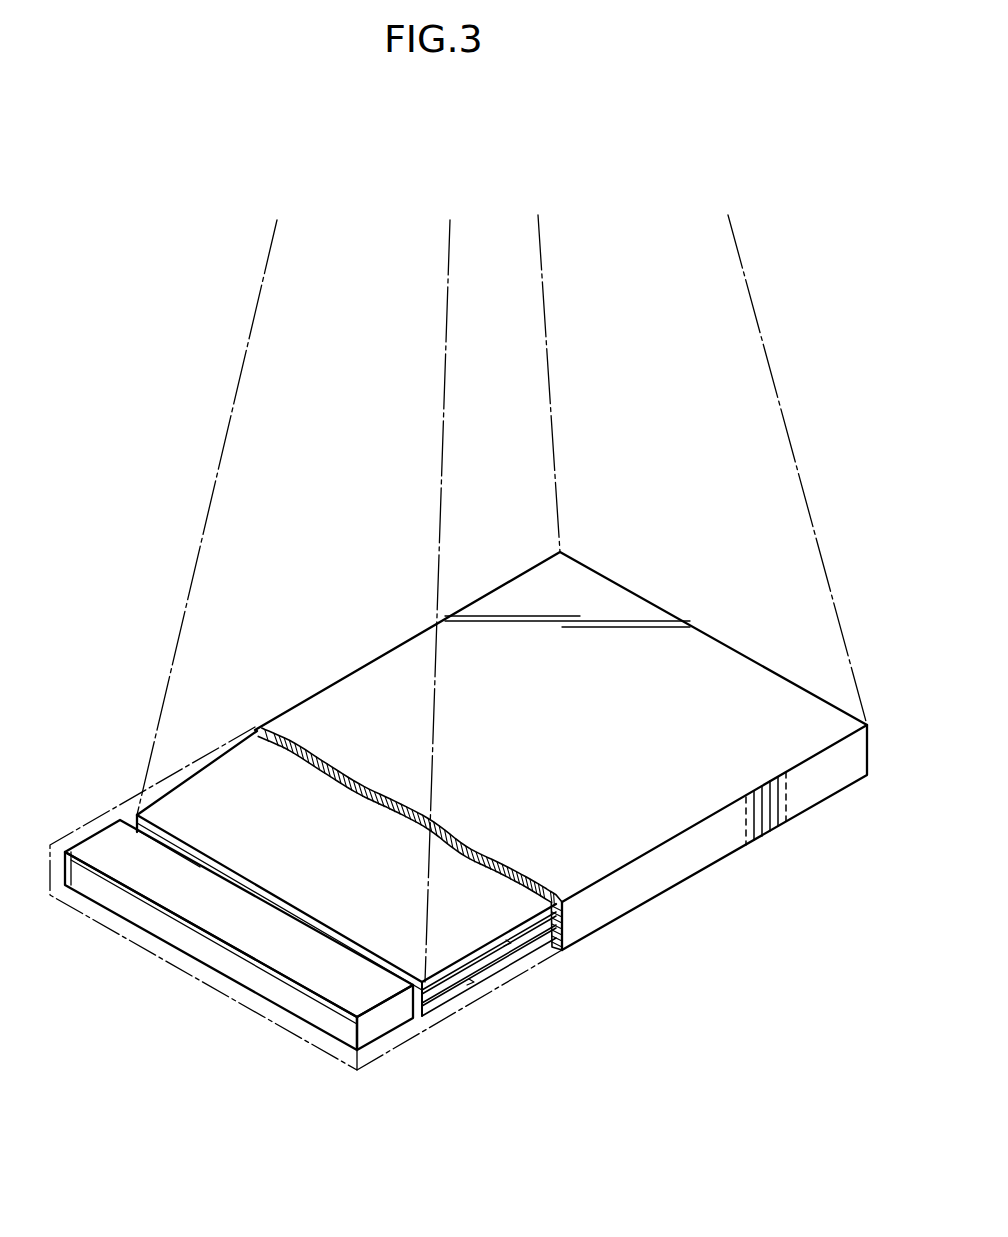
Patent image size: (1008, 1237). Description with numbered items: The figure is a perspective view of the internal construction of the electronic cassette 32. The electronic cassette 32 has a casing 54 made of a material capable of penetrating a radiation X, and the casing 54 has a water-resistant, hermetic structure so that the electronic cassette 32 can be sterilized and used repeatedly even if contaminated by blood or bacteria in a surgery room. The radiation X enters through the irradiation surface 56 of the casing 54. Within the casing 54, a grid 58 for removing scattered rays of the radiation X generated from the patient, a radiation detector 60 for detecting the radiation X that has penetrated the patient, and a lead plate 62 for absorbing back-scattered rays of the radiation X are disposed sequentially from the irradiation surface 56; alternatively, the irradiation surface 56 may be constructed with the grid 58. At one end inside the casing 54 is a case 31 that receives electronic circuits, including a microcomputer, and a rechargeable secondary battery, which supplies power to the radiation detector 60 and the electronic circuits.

The radiation X is at (216, 477).
The case 31 is at (152, 875).
The electronic cassette 32 is at (357, 637).
The casing 54 is at (668, 868).
The irradiation surface 56 is at (690, 636).
The grid 58 is at (497, 883).
The radiation detector 60 is at (537, 952).
The lead plate 62 is at (493, 978).